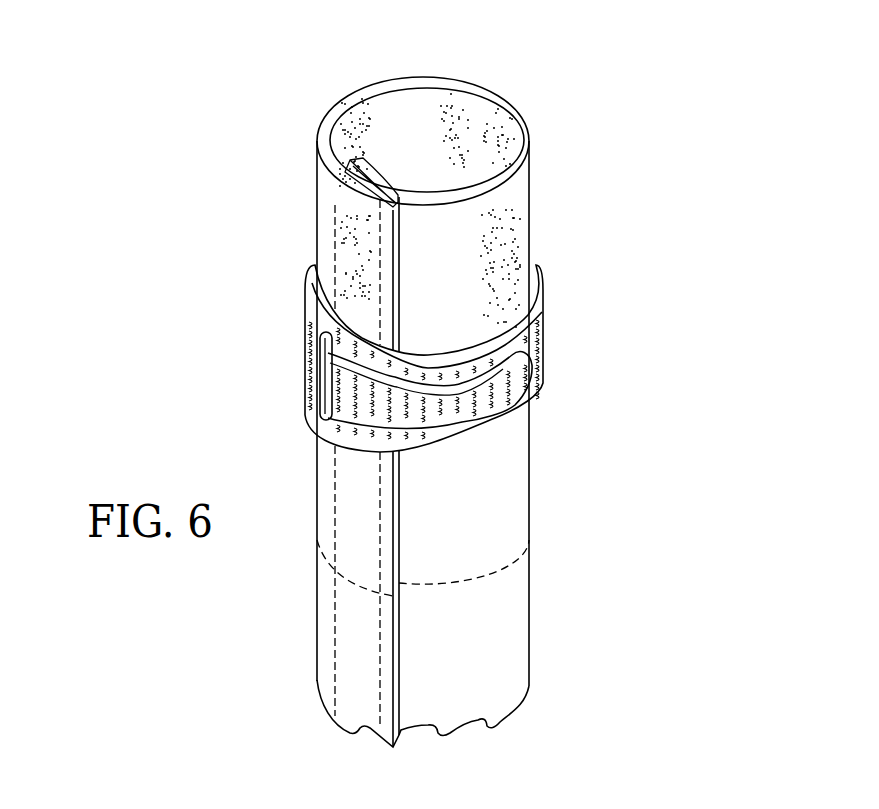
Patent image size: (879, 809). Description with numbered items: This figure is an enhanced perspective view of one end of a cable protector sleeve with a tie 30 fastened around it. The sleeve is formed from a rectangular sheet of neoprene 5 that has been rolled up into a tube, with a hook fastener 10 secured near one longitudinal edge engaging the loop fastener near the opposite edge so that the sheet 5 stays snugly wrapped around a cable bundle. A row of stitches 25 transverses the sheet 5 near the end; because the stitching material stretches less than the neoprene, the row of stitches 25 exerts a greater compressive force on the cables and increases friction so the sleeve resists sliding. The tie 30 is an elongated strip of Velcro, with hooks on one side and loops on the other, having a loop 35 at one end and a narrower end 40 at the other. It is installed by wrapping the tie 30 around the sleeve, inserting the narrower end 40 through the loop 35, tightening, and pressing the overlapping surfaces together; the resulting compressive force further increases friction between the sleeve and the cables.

The sheet of neoprene 5 is at (500, 662).
The hook fastener 10 is at (365, 168).
The row of stitches 25 is at (500, 577).
The tie 30 is at (294, 393).
The loop 35 is at (324, 338).
The narrower end 40 is at (523, 395).